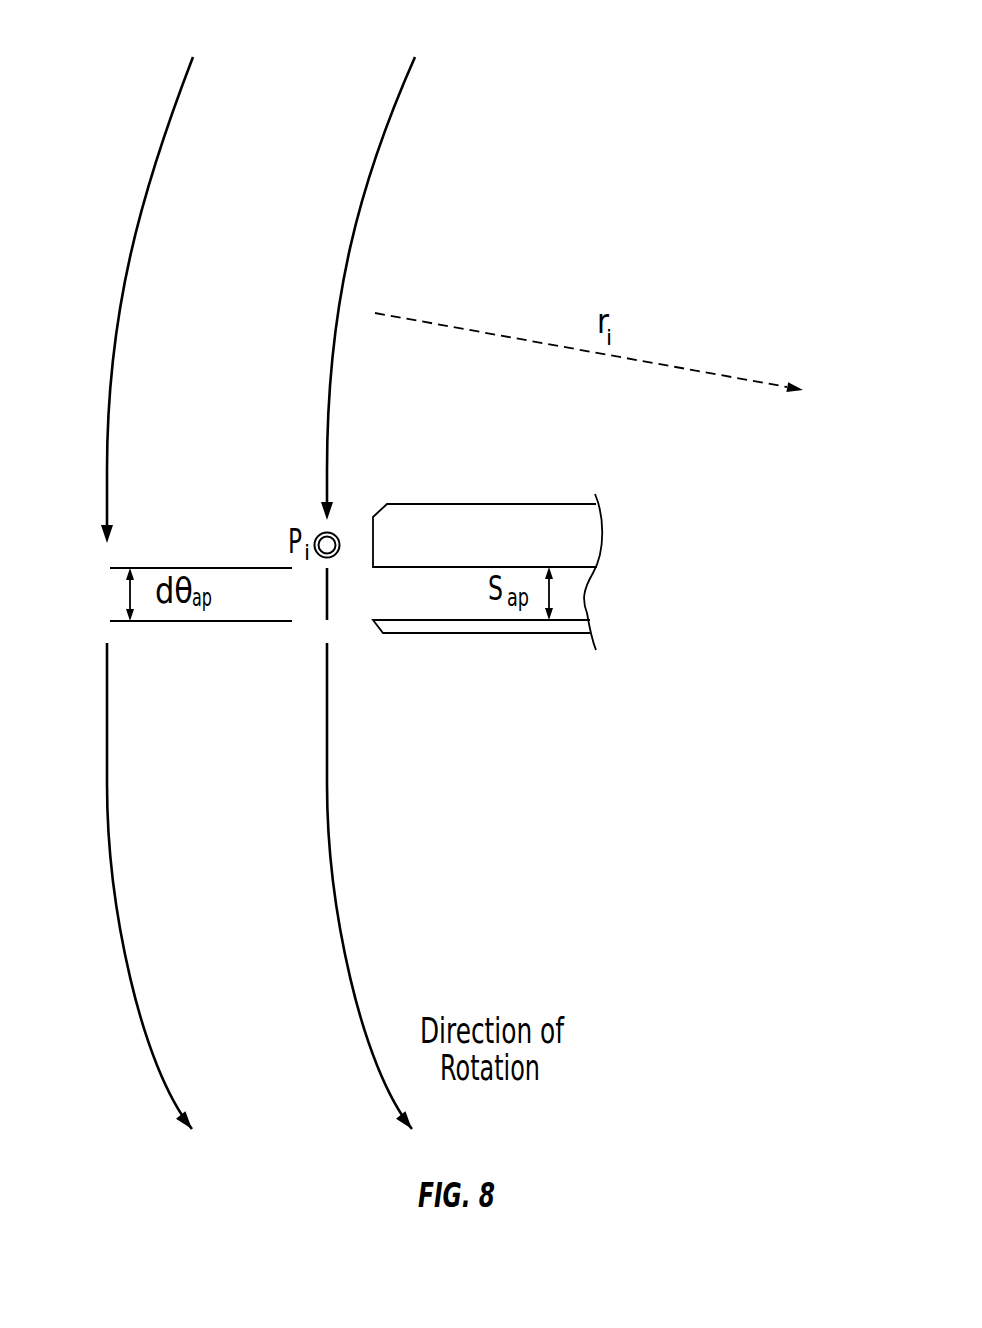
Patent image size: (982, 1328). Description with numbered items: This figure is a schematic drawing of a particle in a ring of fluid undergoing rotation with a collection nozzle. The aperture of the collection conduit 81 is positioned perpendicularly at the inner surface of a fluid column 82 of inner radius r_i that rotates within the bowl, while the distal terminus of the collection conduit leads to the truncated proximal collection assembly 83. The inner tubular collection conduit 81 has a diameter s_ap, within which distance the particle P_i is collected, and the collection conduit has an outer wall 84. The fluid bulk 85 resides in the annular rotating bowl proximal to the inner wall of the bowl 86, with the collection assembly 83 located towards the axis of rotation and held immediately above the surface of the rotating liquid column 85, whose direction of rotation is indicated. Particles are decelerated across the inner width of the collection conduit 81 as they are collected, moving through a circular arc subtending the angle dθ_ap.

The collection conduit 81 is at (575, 592).
The fluid column 82 is at (378, 150).
The proximal collection assembly 83 is at (483, 517).
The outer wall 84 is at (473, 623).
The fluid bulk 85 is at (238, 135).
The inner wall of the bowl 86 is at (152, 147).